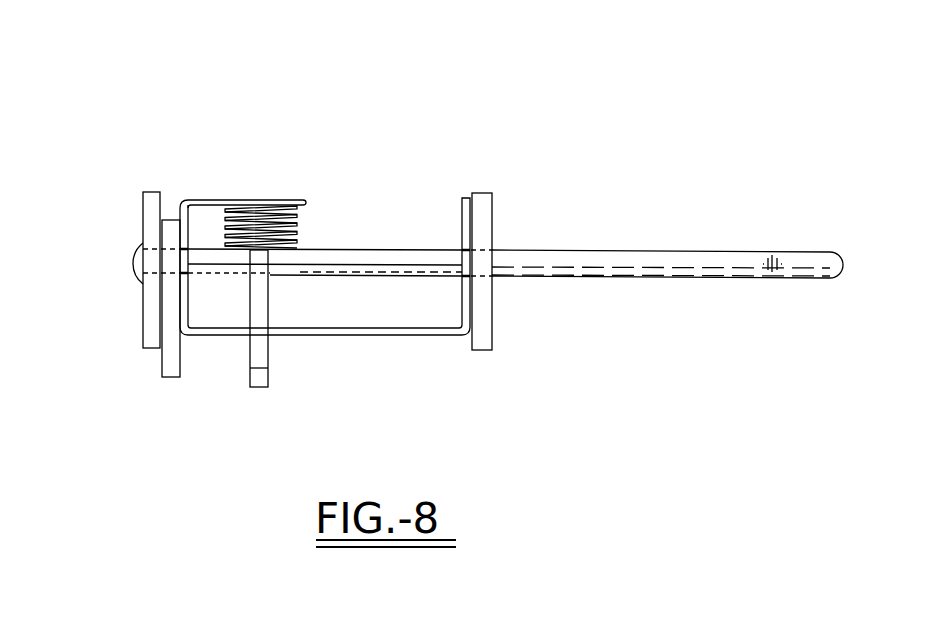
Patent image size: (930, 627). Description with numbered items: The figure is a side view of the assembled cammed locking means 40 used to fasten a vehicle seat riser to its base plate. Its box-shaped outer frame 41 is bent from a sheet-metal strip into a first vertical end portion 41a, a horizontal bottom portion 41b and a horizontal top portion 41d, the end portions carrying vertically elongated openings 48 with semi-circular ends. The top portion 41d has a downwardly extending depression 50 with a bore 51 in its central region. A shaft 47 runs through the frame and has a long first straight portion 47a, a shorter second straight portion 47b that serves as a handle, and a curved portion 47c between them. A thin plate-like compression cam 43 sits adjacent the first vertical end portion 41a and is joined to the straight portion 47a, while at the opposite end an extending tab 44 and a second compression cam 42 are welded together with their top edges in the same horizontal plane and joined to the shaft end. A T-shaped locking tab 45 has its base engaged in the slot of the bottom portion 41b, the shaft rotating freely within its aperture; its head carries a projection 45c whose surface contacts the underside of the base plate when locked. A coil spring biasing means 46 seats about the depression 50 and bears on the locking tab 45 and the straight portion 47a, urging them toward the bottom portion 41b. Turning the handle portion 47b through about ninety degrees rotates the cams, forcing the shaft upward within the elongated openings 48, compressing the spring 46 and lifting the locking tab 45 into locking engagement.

The cammed locking means 40 is at (433, 128).
The box-shaped outer frame 41 is at (208, 199).
The first vertical end portion 41a is at (468, 198).
The horizontal bottom portion 41b is at (438, 335).
The horizontal top portion 41d is at (238, 200).
The compression cam 42 is at (143, 200).
The compression cam 43 is at (488, 210).
The extending tab 44 is at (165, 367).
The T-shaped locking tab 45 is at (260, 388).
The projection 45c is at (268, 378).
The spring biasing means 46 is at (302, 232).
The shaft 47 is at (602, 278).
The first straight portion 47a is at (365, 273).
The second straight portion 47b is at (825, 258).
The curved portion 47c is at (770, 277).
The vertically elongated opening 48 is at (188, 272).
The depression 50 is at (273, 205).
The bore 51 is at (267, 215).